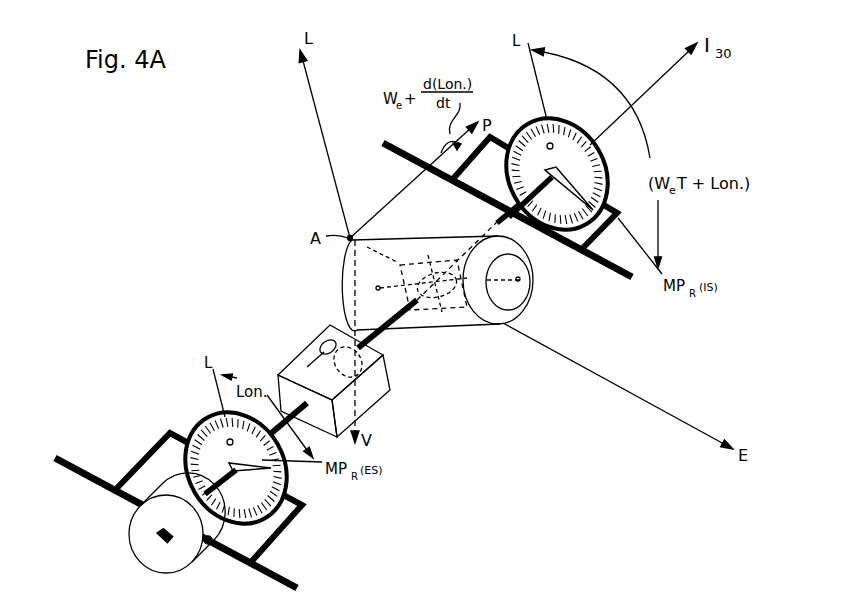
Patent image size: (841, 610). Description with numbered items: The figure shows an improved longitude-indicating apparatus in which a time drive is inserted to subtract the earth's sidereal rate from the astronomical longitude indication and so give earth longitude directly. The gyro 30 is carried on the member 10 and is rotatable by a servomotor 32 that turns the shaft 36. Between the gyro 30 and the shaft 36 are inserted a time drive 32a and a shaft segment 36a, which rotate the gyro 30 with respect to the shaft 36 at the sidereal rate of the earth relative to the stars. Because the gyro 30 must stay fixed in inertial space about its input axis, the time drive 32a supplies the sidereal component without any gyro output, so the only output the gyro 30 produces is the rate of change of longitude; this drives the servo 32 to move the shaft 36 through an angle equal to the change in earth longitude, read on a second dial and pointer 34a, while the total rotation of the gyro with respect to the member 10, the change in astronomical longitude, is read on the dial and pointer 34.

The member 10 is at (586, 266).
The gyro 30 is at (466, 330).
The servomotor 32 is at (140, 532).
The time drive 32a is at (387, 408).
The dial and pointer 34 is at (656, 131).
The second dial and pointer 34a is at (306, 490).
The shaft 36 is at (201, 468).
The shaft segment 36a is at (388, 336).